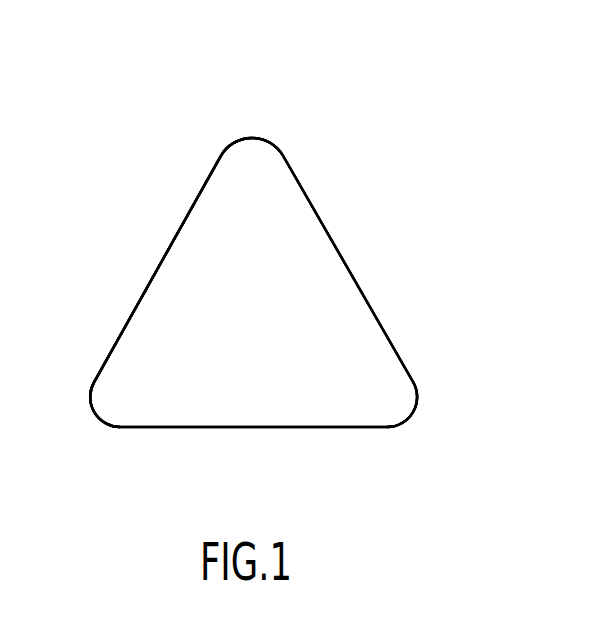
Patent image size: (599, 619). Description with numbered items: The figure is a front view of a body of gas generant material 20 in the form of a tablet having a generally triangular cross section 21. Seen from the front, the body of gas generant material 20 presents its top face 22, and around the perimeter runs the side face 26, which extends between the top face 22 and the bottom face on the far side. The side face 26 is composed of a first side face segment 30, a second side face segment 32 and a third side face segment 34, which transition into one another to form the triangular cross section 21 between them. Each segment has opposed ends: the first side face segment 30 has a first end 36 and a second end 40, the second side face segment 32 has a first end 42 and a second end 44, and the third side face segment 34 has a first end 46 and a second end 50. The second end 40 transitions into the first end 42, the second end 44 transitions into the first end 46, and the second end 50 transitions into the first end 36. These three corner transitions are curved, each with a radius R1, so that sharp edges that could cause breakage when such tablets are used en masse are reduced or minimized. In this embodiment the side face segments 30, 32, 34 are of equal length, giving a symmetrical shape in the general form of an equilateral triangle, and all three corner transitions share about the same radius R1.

The body of gas generant material 20 is at (397, 155).
The triangular cross section 21 is at (133, 315).
The top face 22 is at (197, 260).
The side face 26 is at (377, 312).
The first side face segment 30 is at (207, 178).
The second side face segment 32 is at (314, 428).
The third side face segment 34 is at (303, 183).
The first end of first side face segment 36 is at (227, 145).
The second end of first side face segment 40 is at (90, 353).
The first end of second side face segment 42 is at (117, 438).
The second end of second side face segment 44 is at (388, 432).
The first end of third side face segment 46 is at (405, 352).
The second end of third side face segment 50 is at (272, 133).
The corner transition radius R1 is at (467, 460).